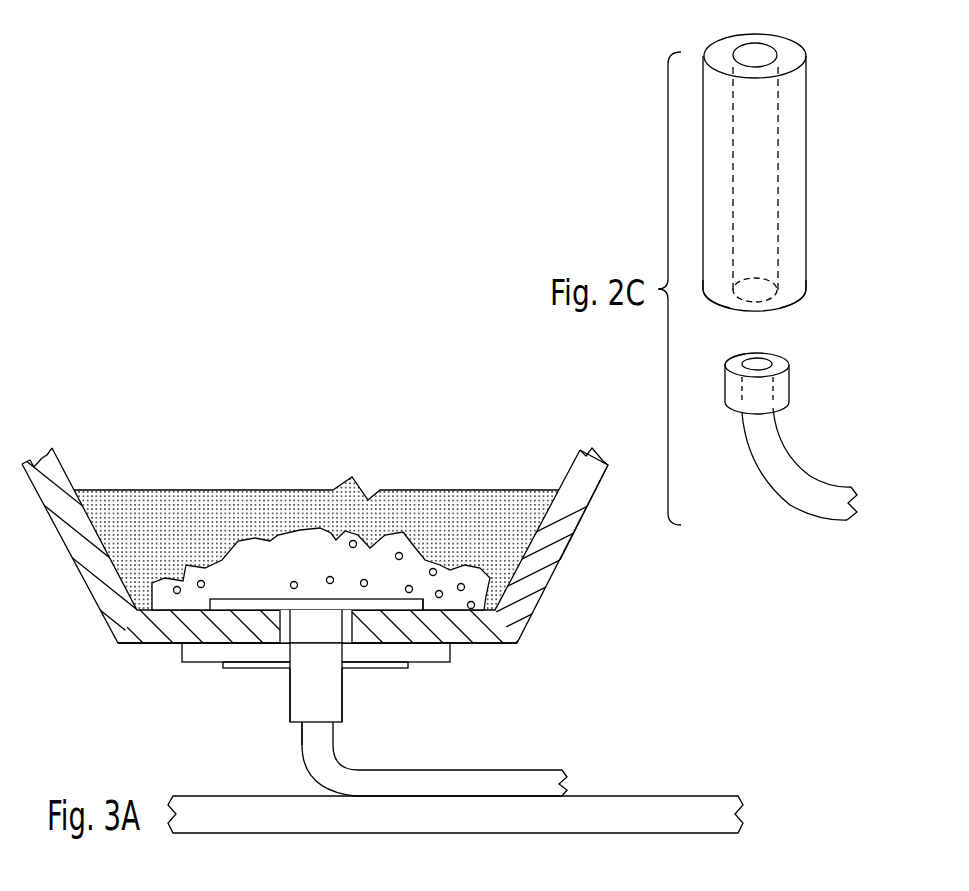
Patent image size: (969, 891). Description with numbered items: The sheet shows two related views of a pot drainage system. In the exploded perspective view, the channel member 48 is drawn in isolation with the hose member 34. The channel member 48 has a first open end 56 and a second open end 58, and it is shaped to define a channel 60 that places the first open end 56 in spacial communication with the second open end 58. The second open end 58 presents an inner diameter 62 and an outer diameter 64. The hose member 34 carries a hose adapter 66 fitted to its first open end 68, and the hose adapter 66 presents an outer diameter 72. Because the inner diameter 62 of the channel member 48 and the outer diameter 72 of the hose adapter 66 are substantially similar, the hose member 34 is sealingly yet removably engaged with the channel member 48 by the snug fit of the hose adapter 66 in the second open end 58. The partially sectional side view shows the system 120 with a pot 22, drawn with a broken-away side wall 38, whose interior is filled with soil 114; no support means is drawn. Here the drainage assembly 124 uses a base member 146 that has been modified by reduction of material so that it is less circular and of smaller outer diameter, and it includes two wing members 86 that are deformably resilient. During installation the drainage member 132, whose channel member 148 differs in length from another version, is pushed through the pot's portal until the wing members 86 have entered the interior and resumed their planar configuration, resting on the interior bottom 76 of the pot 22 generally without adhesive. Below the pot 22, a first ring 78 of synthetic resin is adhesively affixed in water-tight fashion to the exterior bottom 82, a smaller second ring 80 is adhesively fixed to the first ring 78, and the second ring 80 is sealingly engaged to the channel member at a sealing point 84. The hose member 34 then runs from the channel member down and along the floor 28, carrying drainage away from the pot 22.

In FIG. 3A, the pot 22 is at (560, 576).
In FIG. 3A, the substrate base plate 28 is at (220, 835).
In FIG. 2C, the hose member 34 is at (793, 458).
In FIG. 3A, the hose member 34 is at (533, 778).
In FIG. 3A, the dish side wall 38 is at (595, 462).
In FIG. 2C, the channel member 48 is at (712, 100).
In FIG. 2C, the first open end 56 is at (797, 68).
In FIG. 2C, the second open end 58 is at (715, 297).
In FIG. 2C, the channel 60 is at (778, 173).
In FIG. 2C, the inner diameter 62 is at (778, 290).
In FIG. 2C, the outer diameter 64 is at (797, 305).
In FIG. 2C, the hose adapter 66 is at (795, 380).
In FIG. 2C, the first open end 68 is at (750, 358).
In FIG. 2C, the outer diameter 72 is at (725, 365).
In FIG. 3A, the interior bottom 76 is at (389, 612).
In FIG. 3A, the first ring 78 is at (450, 655).
In FIG. 3A, the second ring 80 is at (405, 672).
In FIG. 3A, the exterior bottom 82 is at (155, 646).
In FIG. 3A, the sealing point 84 is at (287, 672).
In FIG. 3A, the wing members 86 is at (271, 603).
In FIG. 3A, the soil 114 is at (297, 564).
In FIG. 3A, the system 120 is at (535, 637).
In FIG. 3A, the drainage assembly 124 is at (376, 682).
In FIG. 3A, the drainage member 132 is at (343, 690).
In FIG. 3A, the base member 146 is at (237, 605).
In FIG. 3A, the channel member 148 is at (293, 700).